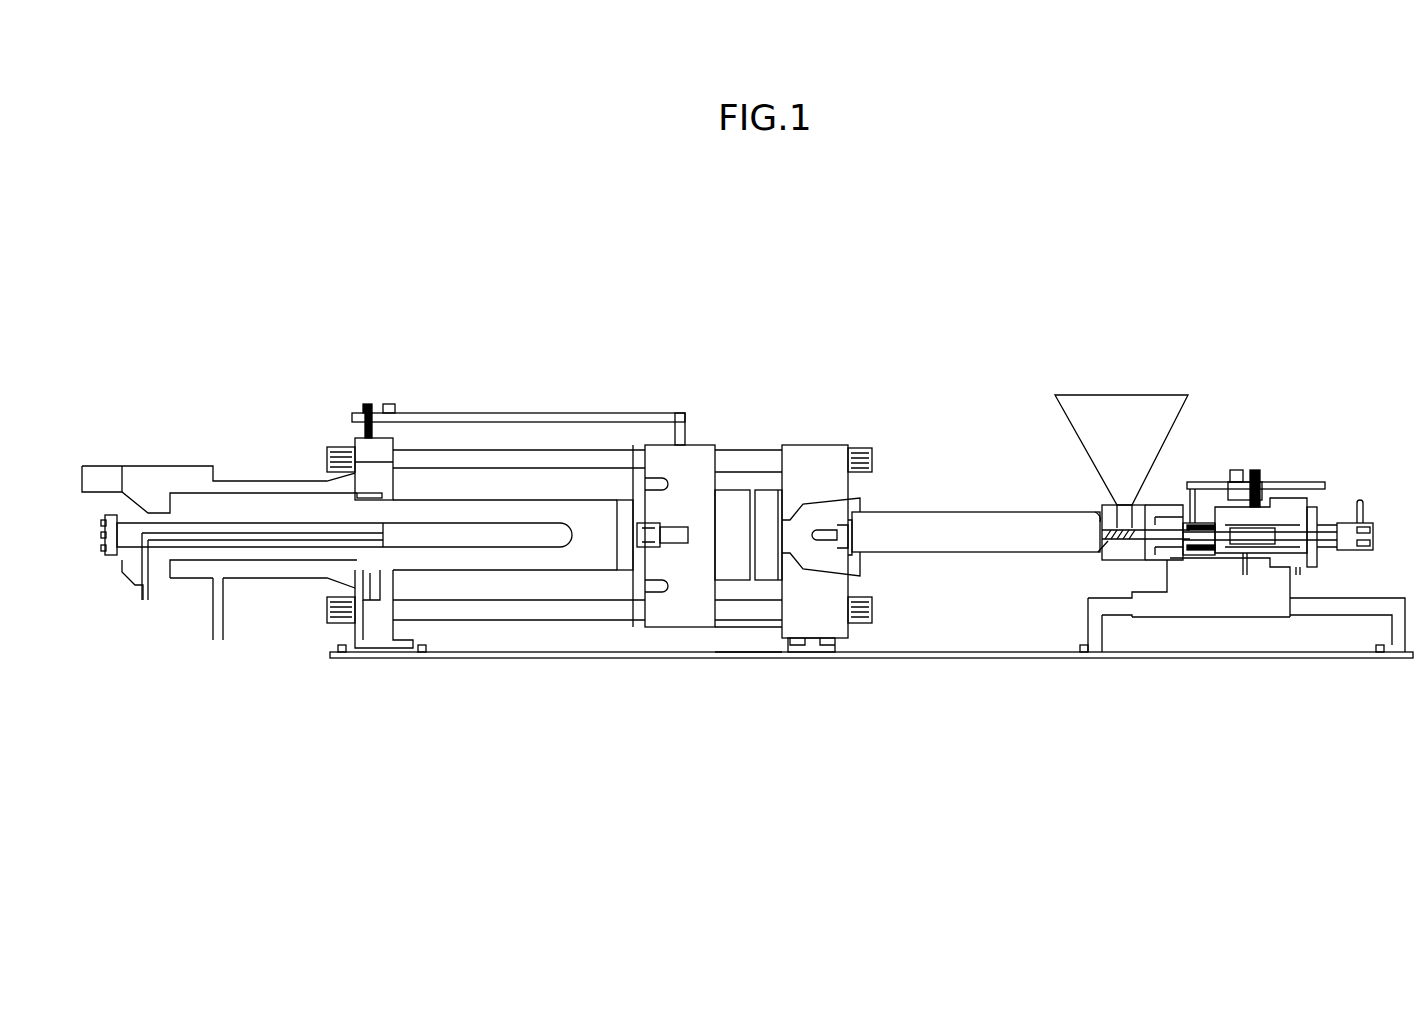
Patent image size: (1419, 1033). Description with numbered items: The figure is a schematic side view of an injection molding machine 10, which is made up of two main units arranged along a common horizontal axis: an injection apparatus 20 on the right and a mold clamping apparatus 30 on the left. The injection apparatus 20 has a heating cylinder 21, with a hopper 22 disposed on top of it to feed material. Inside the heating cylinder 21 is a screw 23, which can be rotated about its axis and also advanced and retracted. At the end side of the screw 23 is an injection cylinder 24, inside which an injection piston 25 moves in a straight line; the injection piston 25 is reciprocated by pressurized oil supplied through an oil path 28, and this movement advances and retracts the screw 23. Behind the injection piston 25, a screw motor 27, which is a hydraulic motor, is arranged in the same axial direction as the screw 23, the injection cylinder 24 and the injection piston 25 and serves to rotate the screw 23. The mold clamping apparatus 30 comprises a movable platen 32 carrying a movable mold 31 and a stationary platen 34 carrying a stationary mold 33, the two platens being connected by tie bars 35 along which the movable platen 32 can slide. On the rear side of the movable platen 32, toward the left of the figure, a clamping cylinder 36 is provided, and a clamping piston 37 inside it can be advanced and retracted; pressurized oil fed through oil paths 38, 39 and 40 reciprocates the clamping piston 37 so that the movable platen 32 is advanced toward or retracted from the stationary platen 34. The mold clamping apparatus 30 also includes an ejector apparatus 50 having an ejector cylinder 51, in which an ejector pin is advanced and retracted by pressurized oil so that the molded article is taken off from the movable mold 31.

The injection molding machine 10 is at (157, 364).
The injection apparatus 20 is at (897, 512).
The heating cylinder 21 is at (1028, 512).
The hopper 22 is at (1117, 393).
The screw 23 is at (1097, 543).
The injection cylinder 24 is at (1158, 505).
The injection piston 25 is at (1203, 520).
The screw motor 27 is at (1347, 520).
The oil path 28 is at (1247, 573).
The mold clamping apparatus 30 is at (157, 465).
The movable mold 31 is at (732, 490).
The movable platen 32 is at (697, 445).
The stationary mold 33 is at (763, 490).
The stationary platen 34 is at (812, 445).
The tie bars 35 is at (750, 622).
The clamping cylinder 36 is at (253, 478).
The clamping piston 37 is at (442, 500).
The oil path 38 is at (150, 600).
The oil path 39 is at (225, 628).
The oil path 40 is at (377, 590).
The ejector apparatus 50 is at (685, 555).
The ejector cylinder 51 is at (650, 580).